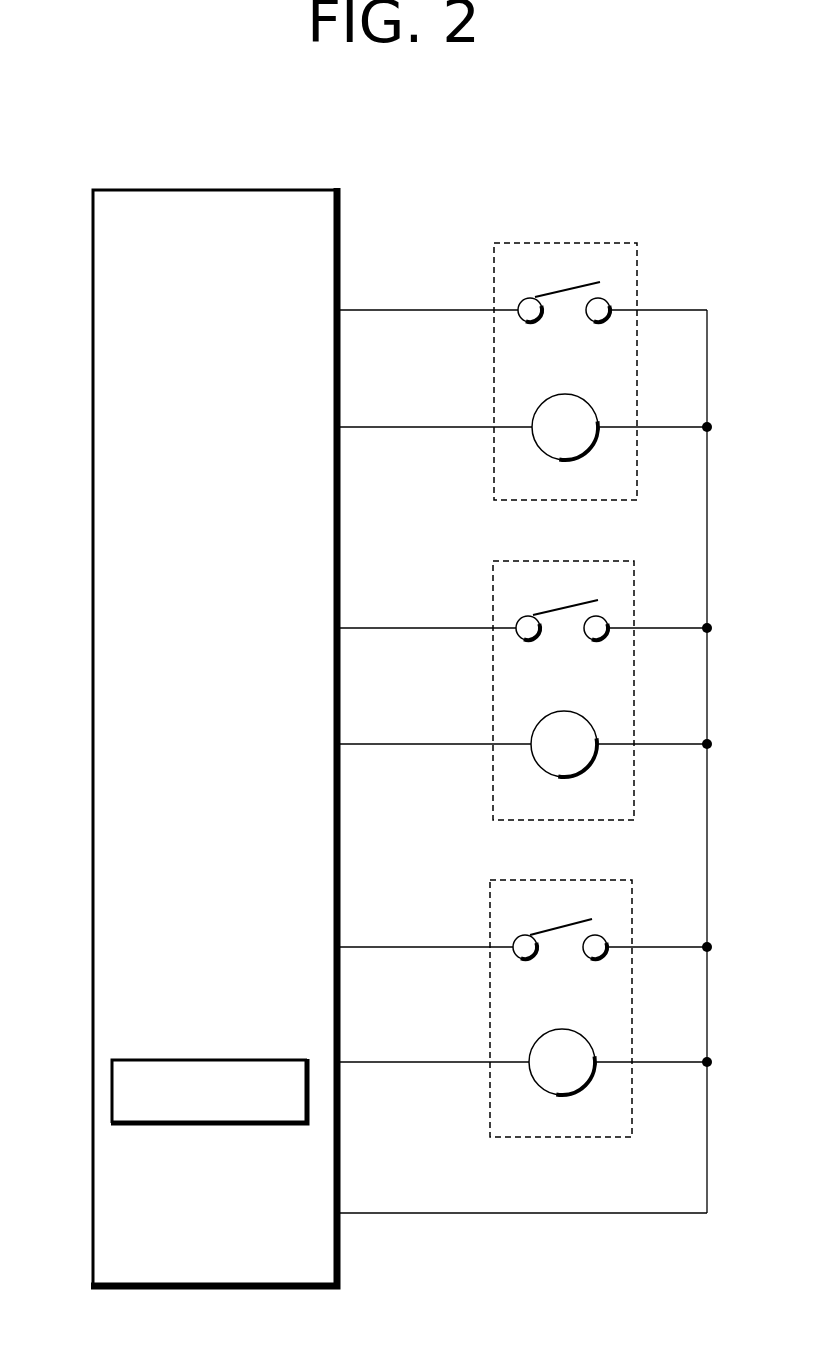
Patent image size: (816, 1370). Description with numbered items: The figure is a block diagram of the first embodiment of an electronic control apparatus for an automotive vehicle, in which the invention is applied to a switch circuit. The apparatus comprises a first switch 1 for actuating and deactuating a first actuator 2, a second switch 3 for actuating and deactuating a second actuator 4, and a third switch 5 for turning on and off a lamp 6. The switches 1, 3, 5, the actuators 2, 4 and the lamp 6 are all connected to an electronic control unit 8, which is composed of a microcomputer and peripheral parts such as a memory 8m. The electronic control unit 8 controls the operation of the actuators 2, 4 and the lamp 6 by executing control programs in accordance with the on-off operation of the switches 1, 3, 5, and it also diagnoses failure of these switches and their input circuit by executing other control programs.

The first switch 1 is at (557, 282).
The first actuator 2 is at (587, 397).
The second switch 3 is at (556, 598).
The second actuator 4 is at (585, 717).
The third switch 5 is at (552, 920).
The lamp 6 is at (582, 1037).
The electronic control unit 8 is at (197, 188).
The memory 8m is at (202, 1123).